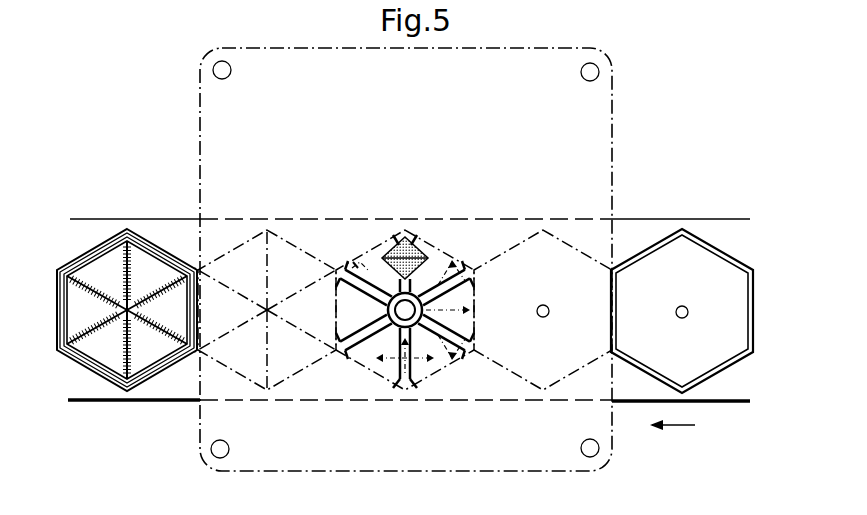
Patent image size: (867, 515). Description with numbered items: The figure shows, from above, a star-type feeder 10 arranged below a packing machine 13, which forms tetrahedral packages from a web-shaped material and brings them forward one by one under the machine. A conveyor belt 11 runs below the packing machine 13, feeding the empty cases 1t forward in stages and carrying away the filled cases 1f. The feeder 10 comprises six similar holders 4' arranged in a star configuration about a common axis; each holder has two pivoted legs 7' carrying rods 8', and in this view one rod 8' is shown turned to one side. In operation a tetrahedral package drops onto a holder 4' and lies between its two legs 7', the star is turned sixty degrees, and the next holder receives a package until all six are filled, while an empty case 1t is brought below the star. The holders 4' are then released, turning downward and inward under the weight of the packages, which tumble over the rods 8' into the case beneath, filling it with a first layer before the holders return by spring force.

The packing machine 13 is at (200, 148).
The conveyor belt 11 is at (679, 214).
The feeder 10 is at (457, 232).
The pivoted legs 7' is at (405, 288).
The rods 8' is at (343, 247).
The holders 4' is at (389, 233).
The filled cases 1f is at (138, 383).
The empty cases 1t is at (698, 367).